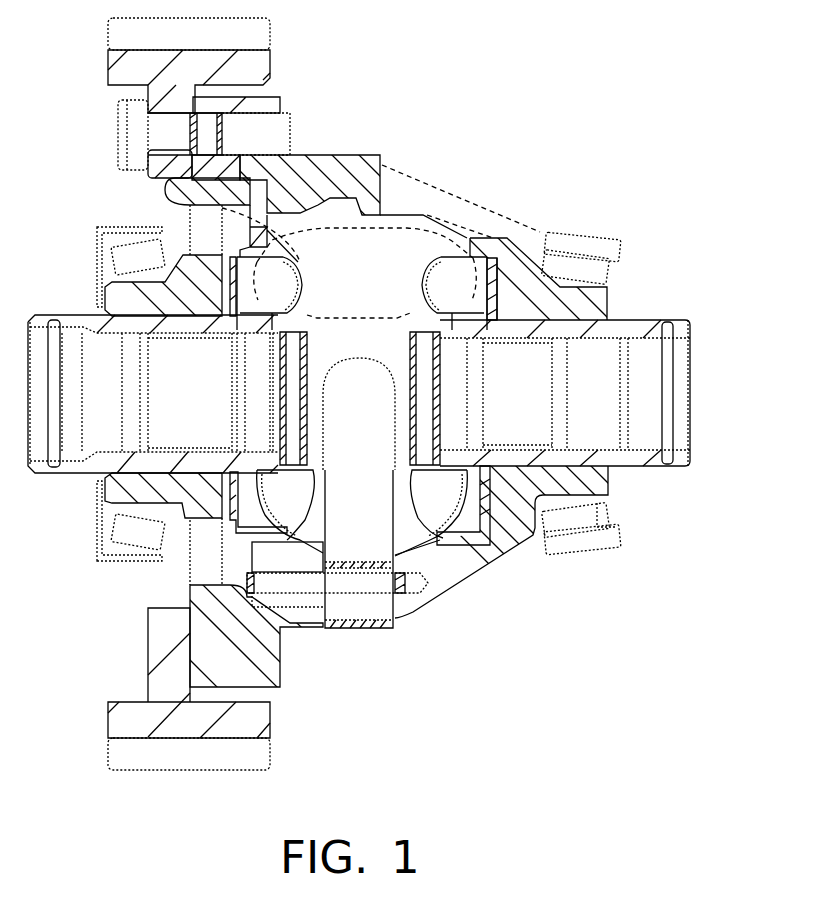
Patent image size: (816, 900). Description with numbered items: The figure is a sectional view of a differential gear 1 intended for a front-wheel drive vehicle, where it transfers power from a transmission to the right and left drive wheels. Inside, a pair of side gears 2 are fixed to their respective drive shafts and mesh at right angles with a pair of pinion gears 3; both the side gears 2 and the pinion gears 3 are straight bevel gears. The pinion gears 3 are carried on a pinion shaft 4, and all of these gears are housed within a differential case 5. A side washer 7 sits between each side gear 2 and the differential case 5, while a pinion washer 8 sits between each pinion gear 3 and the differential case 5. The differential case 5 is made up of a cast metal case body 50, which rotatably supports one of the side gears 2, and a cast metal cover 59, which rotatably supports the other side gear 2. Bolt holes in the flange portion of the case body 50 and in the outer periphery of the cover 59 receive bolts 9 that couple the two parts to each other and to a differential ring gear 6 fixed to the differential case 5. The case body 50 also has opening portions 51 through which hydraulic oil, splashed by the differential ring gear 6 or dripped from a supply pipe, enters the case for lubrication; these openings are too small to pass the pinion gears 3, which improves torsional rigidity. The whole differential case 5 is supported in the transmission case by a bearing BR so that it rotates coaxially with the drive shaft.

The differential gear 1 is at (550, 637).
The side gears 2 is at (70, 308).
The pinion gears 3 is at (300, 270).
The pinion shaft 4 is at (360, 604).
The differential case 5 is at (399, 86).
The case body 50 is at (327, 177).
The opening portions 51 is at (447, 214).
The cover 59 is at (207, 178).
The differential ring gear 6 is at (100, 719).
The side washer 7 is at (492, 280).
The pinion washer 8 is at (300, 594).
The bolts 9 is at (128, 133).
The bearing BR is at (88, 528).